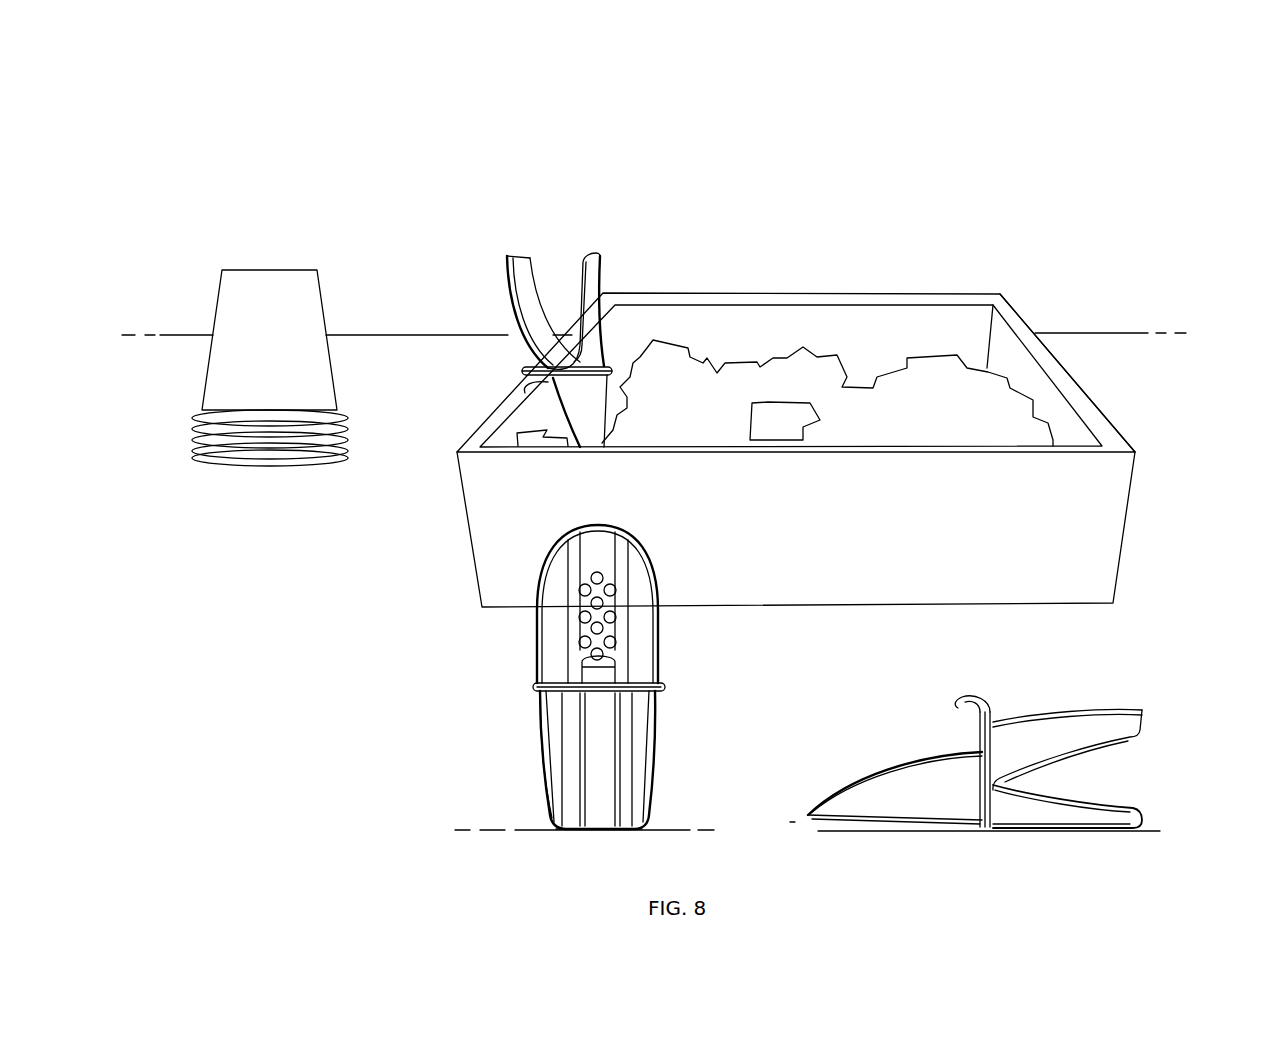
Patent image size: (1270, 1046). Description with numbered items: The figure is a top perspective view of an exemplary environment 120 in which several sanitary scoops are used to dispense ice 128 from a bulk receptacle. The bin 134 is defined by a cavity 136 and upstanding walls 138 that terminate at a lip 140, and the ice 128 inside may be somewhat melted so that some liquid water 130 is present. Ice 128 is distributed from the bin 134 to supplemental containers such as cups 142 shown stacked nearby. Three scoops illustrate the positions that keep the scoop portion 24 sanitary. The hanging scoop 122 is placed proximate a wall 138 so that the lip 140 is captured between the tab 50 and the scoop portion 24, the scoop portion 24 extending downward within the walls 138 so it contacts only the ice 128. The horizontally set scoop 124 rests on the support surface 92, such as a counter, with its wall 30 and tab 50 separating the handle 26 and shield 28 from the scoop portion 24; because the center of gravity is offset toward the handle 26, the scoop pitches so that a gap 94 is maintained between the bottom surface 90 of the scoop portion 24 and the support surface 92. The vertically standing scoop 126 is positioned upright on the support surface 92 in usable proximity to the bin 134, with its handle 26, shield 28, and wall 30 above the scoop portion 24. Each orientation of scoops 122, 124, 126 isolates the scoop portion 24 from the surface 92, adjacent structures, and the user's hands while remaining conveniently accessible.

The environment 120 is at (1075, 148).
The hanging scoop 122 is at (504, 259).
The horizontally set scoop 124 is at (1015, 725).
The vertically standing scoop 126 is at (592, 677).
The ice 128 is at (668, 363).
The liquid water 130 is at (781, 420).
The bin 134 is at (1014, 301).
The cavity 136 is at (785, 338).
The upstanding walls 138 is at (779, 403).
The lip 140 is at (952, 300).
The cups 142 is at (282, 368).
The scoop portion 24 is at (640, 575).
The handle 26 is at (597, 755).
The shield 28 is at (557, 797).
The wall 30 is at (598, 669).
The tab 50 is at (518, 393).
The bottom surface 90 is at (895, 774).
The support surface 92 is at (660, 830).
The gap 94 is at (800, 822).